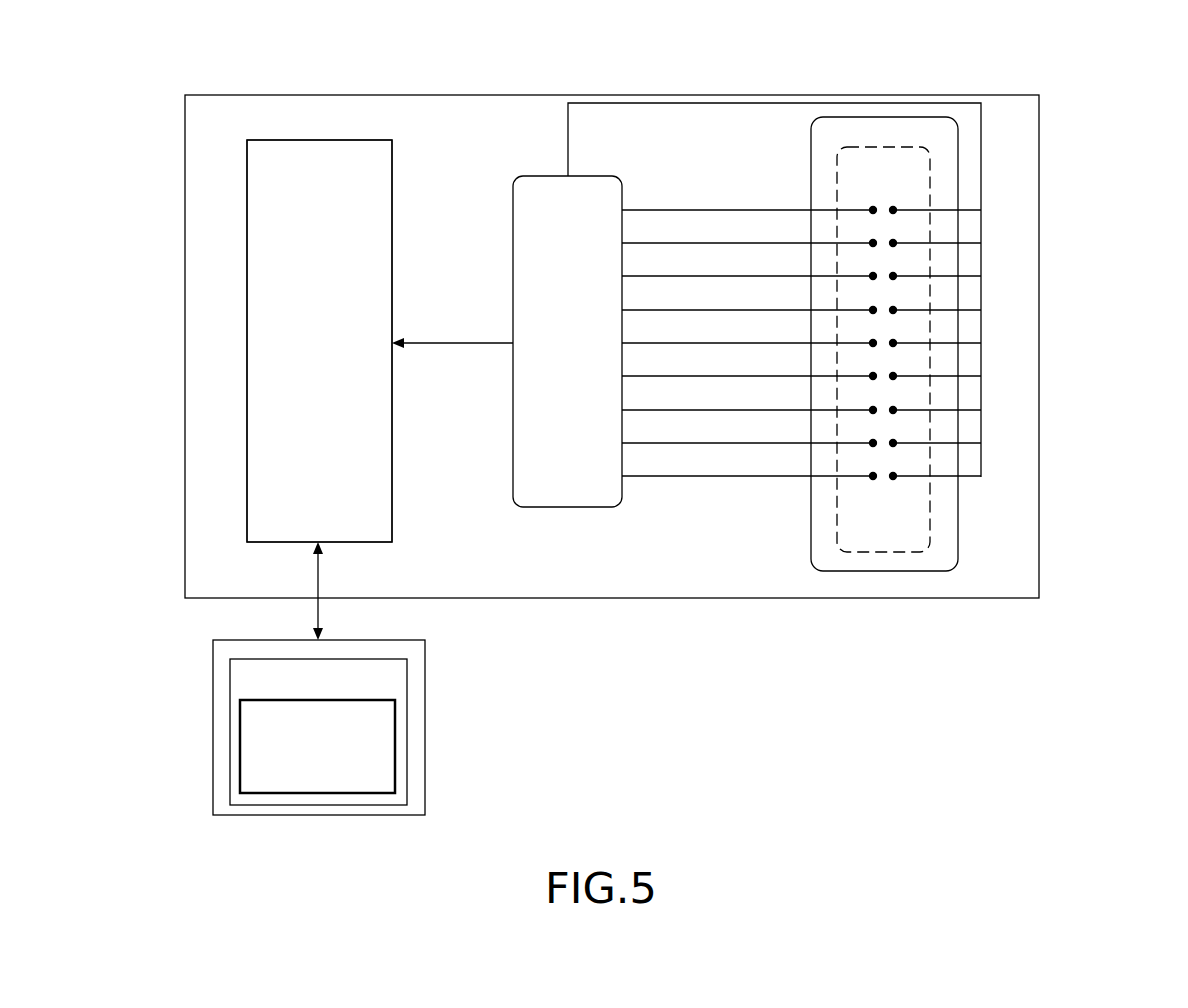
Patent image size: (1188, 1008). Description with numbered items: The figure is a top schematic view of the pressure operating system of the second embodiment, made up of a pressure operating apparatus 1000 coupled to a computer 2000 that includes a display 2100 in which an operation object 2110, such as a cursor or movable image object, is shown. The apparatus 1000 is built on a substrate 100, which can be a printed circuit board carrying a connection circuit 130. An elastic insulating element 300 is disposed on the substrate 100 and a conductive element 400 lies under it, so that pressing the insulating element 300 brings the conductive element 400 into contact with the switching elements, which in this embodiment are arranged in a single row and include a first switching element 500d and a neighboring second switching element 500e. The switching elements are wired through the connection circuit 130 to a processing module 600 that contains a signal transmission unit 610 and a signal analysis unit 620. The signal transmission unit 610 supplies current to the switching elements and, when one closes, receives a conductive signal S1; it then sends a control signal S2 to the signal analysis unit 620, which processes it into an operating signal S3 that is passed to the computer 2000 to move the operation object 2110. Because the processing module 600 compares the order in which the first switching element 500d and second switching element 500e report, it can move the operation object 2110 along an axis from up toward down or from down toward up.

The pressure operating apparatus 1000 is at (1106, 124).
The substrate 100 is at (1022, 466).
The connection circuit 130 is at (981, 427).
The insulating element 300 is at (942, 523).
The conductive element 400 is at (878, 556).
The first switching element 500d is at (902, 228).
The second switching element 500e is at (902, 260).
The processing module 600 is at (235, 211).
The signal transmission unit 610 is at (525, 232).
The signal analysis unit 620 is at (268, 262).
The computer 2000 is at (224, 656).
The display 2100 is at (240, 690).
The operation object 2110 is at (255, 723).
The conductive signal S1 is at (690, 443).
The control signal S2 is at (450, 343).
The operating signal S3 is at (318, 578).